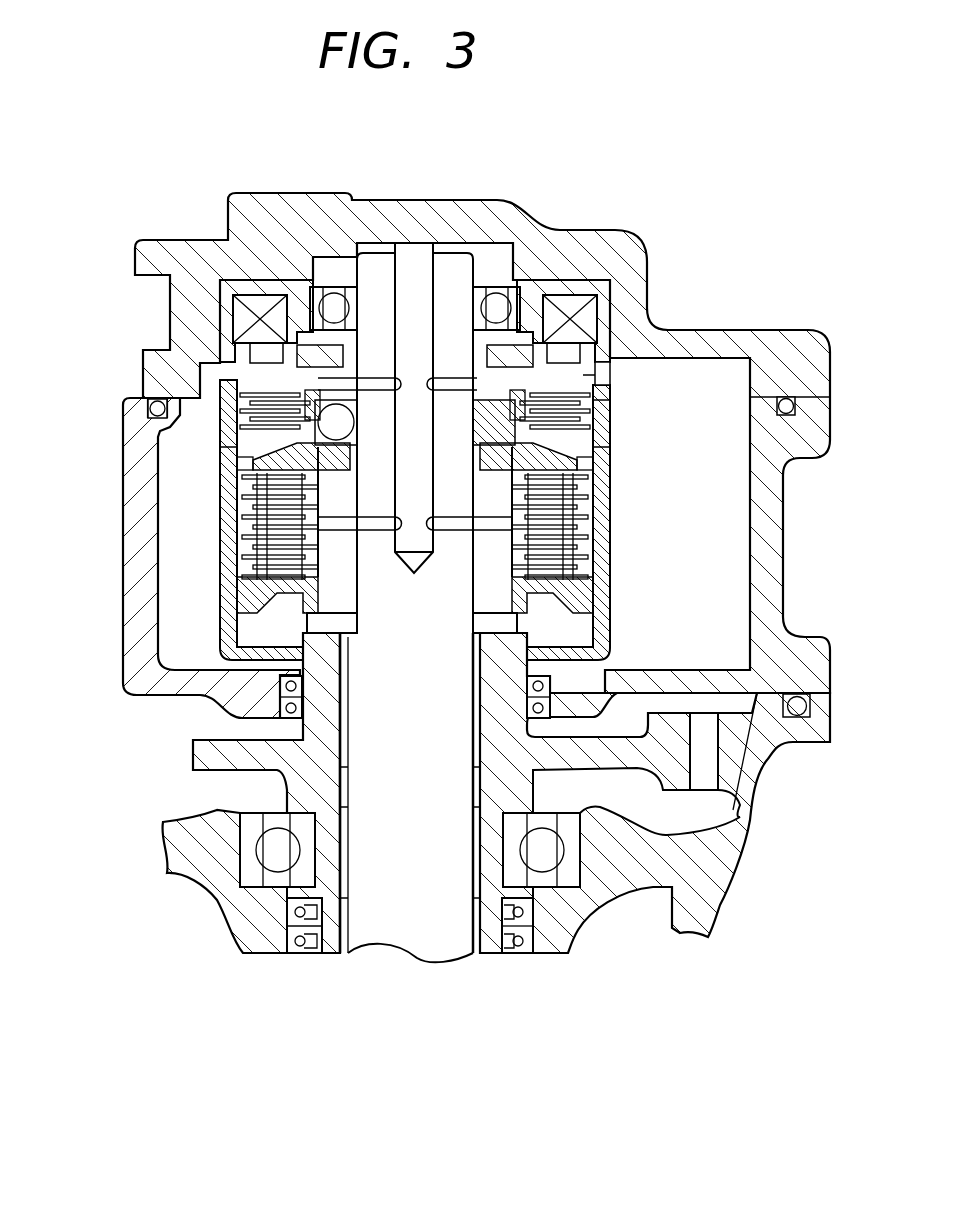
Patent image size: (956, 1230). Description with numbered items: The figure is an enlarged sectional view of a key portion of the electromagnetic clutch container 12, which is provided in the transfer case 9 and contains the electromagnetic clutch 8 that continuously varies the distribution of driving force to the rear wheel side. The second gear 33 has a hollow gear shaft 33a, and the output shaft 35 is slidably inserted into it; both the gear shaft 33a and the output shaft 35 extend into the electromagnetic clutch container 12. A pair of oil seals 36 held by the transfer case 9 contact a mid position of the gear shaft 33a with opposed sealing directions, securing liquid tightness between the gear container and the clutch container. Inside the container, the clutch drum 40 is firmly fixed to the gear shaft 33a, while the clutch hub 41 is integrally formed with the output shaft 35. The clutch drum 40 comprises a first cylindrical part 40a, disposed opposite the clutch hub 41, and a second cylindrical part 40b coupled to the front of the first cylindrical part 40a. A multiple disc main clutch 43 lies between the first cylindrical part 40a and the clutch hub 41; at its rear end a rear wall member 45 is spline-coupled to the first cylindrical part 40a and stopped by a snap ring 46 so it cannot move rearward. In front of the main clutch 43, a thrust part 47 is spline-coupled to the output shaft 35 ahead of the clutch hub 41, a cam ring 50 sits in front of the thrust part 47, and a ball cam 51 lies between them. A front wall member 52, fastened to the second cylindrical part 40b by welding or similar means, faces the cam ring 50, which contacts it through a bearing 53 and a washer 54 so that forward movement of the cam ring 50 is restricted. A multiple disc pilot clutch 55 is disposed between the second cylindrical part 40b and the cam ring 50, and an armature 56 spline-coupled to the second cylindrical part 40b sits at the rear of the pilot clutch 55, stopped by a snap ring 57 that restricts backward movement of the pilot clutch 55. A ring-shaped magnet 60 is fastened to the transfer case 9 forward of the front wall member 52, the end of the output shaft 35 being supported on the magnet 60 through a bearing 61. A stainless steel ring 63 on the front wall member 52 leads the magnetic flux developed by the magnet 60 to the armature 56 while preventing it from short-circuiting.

The electromagnetic clutch 8 is at (703, 633).
The transfer case 9 is at (128, 505).
The electromagnetic clutch container 12 is at (735, 533).
The second gear 33 is at (745, 828).
The gear shaft 33a is at (712, 895).
The output shaft 35 is at (432, 930).
The oil seals 36 is at (283, 712).
The clutch drum 40 is at (619, 559).
The first cylindrical part 40a is at (603, 505).
The second cylindrical part 40b is at (612, 425).
The clutch hub 41 is at (488, 573).
The main clutch 43 is at (232, 543).
The rear wall member 45 is at (232, 600).
The snap ring 46 is at (232, 612).
The thrust part 47 is at (222, 460).
The cam ring 50 is at (220, 393).
The ball cam 51 is at (222, 430).
The front wall member 52 is at (220, 350).
The bearing 53 is at (220, 368).
The washer 54 is at (220, 360).
The pilot clutch 55 is at (603, 365).
The armature 56 is at (615, 440).
The snap ring 57 is at (598, 410).
The ring-shaped magnet 60 is at (575, 300).
The bearing 61 is at (517, 287).
The ring 63 is at (648, 292).